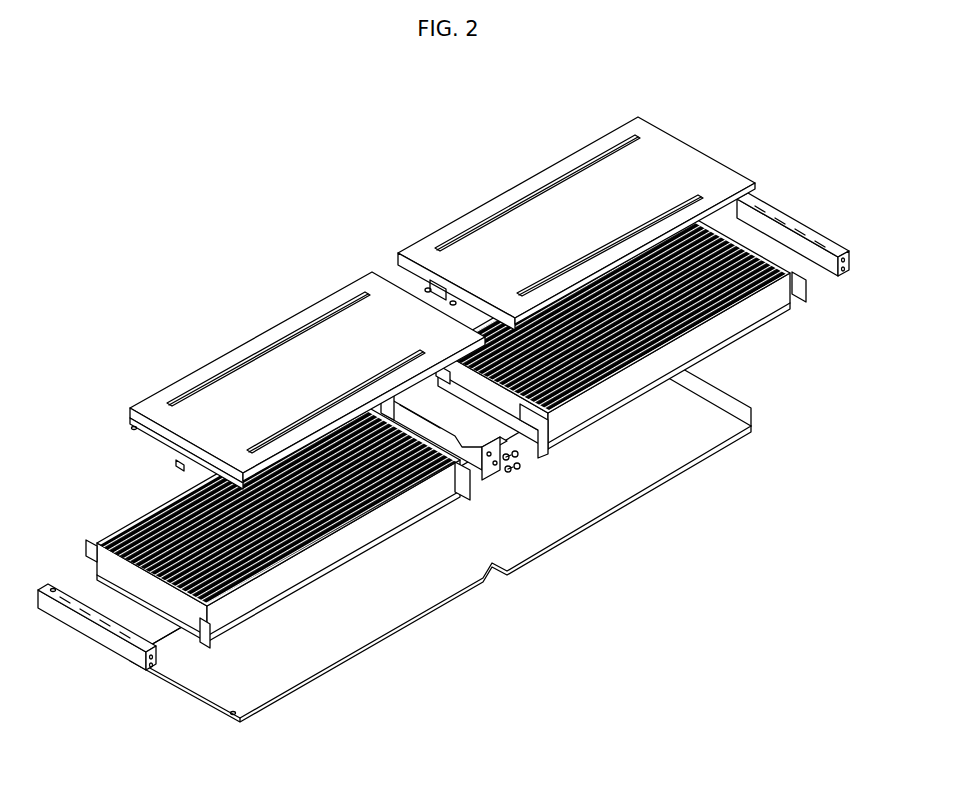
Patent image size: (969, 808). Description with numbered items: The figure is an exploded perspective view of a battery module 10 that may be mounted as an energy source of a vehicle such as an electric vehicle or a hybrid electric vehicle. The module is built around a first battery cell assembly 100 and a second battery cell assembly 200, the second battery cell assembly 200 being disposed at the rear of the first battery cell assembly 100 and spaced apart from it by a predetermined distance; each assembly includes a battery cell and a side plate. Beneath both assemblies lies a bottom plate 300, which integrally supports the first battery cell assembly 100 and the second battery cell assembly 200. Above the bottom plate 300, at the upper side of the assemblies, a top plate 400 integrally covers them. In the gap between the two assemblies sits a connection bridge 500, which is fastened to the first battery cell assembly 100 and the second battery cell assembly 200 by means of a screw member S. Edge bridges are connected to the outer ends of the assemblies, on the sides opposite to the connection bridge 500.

The battery module 10 is at (247, 193).
The first battery cell assembly 100 is at (108, 504).
The second battery cell assembly 200 is at (769, 347).
The bottom plate 300 is at (379, 665).
The top plate 400 is at (497, 172).
The connection bridge 500 is at (477, 482).
The screw member S is at (515, 473).